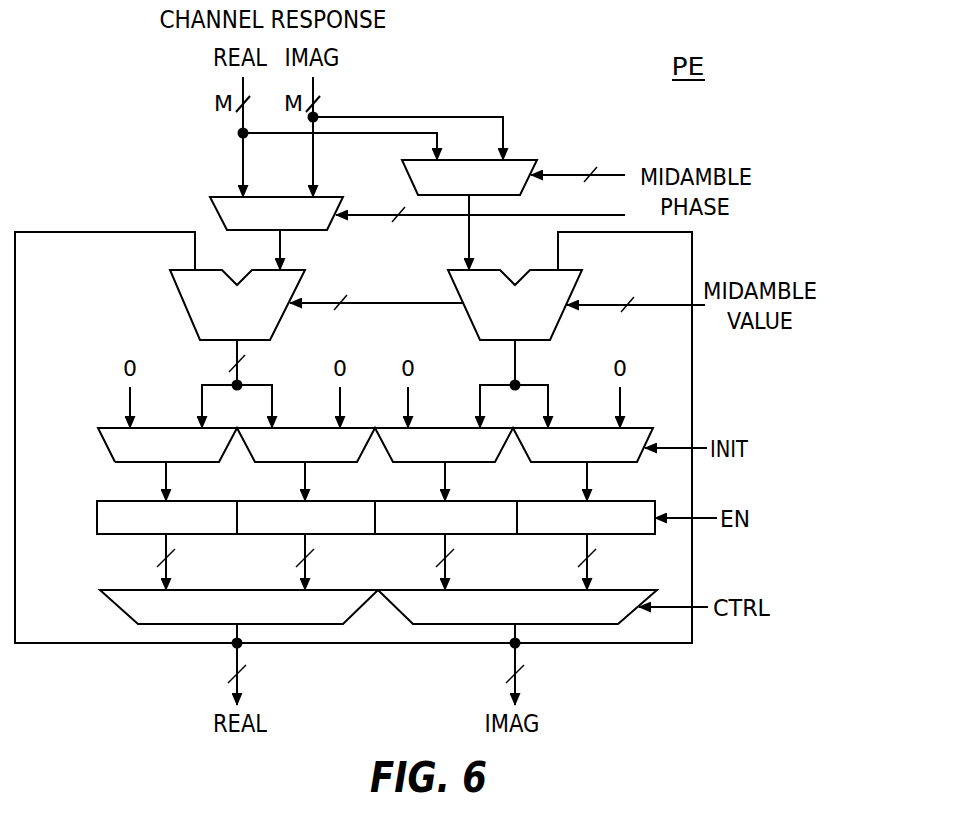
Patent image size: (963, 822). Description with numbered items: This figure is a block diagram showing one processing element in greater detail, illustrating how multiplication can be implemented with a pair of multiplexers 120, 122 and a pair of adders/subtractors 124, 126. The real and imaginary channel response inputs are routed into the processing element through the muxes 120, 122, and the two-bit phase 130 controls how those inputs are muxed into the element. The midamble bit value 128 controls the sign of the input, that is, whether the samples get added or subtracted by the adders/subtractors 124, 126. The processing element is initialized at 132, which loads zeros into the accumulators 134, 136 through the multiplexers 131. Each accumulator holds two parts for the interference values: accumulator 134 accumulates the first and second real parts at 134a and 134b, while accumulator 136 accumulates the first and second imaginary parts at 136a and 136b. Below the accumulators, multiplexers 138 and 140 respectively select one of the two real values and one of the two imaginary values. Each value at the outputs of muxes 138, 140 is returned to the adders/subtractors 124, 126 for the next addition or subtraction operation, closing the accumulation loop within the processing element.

The multiplexer 120 is at (210, 197).
The multiplexer 122 is at (527, 160).
The adder/subtractor 124 is at (183, 301).
The adder/subtractor 126 is at (452, 278).
The midamble bit value 128 is at (860, 323).
The 2-bit phase 130 is at (812, 201).
The multiplexers 131 is at (92, 446).
The initialization 132 is at (810, 462).
The accumulator 134 is at (218, 529).
The real part REAL 1 134a is at (133, 501).
The real part REAL 2 134b is at (275, 501).
The accumulator 136 is at (499, 529).
The imaginary part Imag. 1 136a is at (413, 501).
The imaginary part Imag. 2 136b is at (557, 501).
The multiplexer 138 is at (163, 624).
The multiplexer 140 is at (450, 624).